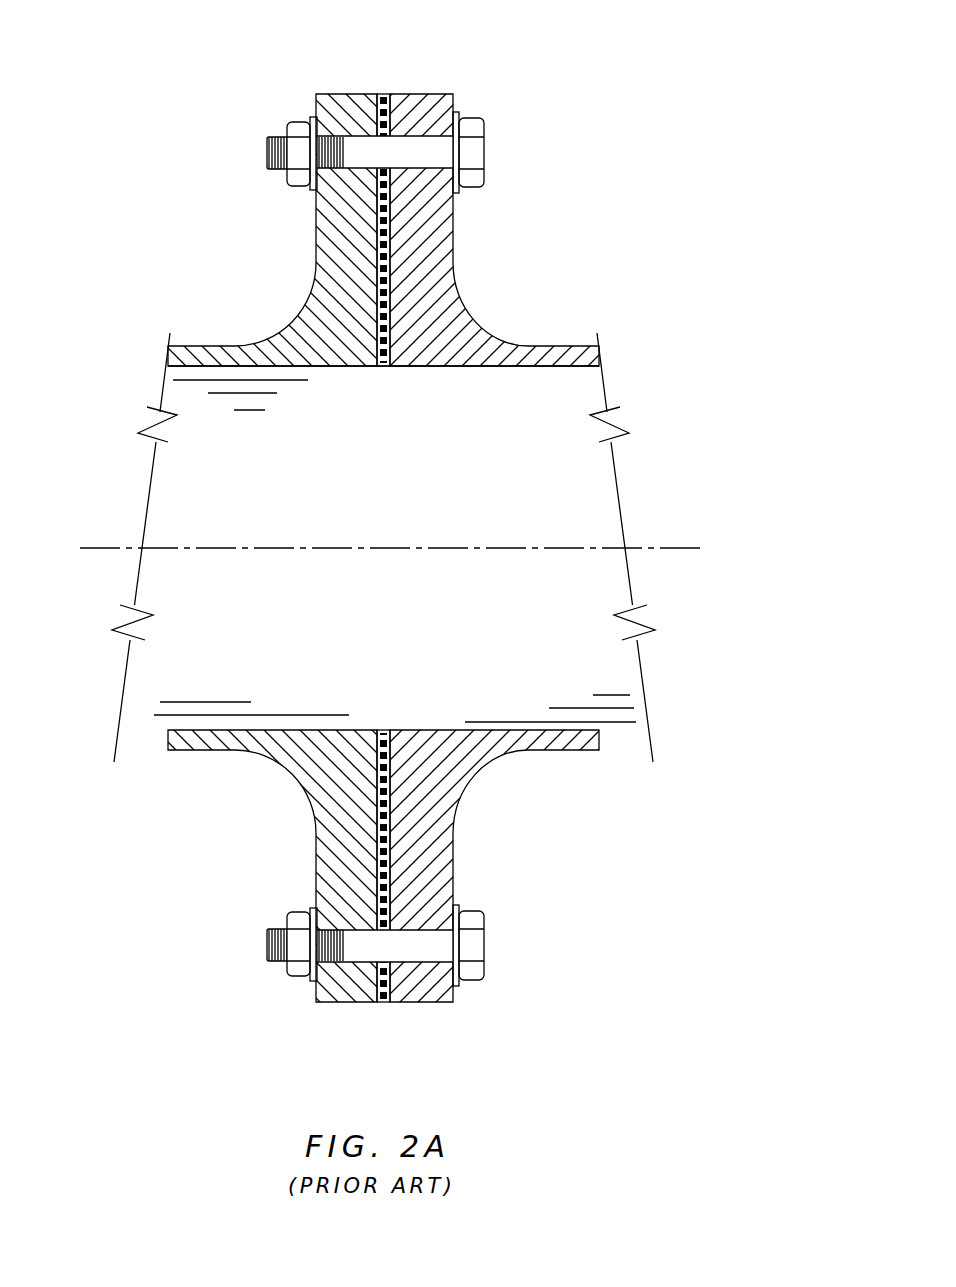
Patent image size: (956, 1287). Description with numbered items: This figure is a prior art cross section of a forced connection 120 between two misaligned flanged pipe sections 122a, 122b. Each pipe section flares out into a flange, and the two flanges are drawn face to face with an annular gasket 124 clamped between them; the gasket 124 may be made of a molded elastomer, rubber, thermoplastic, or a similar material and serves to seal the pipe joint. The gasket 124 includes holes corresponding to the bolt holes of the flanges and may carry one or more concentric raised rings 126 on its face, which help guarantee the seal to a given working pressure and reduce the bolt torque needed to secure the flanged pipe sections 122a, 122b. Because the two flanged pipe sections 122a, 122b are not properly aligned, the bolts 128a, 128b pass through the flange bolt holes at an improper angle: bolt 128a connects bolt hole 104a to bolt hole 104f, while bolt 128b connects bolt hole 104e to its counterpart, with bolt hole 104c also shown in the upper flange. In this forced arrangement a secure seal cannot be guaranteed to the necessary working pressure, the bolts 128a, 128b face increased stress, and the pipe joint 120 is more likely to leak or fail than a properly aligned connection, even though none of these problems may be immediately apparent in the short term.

The forced connection 120 is at (208, 118).
The flanged pipe section 122a is at (303, 322).
The flanged pipe section 122b is at (490, 336).
The bolt hole 104a is at (437, 142).
The bolt hole 104c is at (350, 147).
The bolt hole 104e is at (421, 955).
The bolt hole 104f is at (348, 950).
The annular gasket 124 is at (383, 92).
The concentric raised ring 126 is at (383, 365).
The bolt 128a is at (477, 150).
The bolt 128b is at (475, 940).